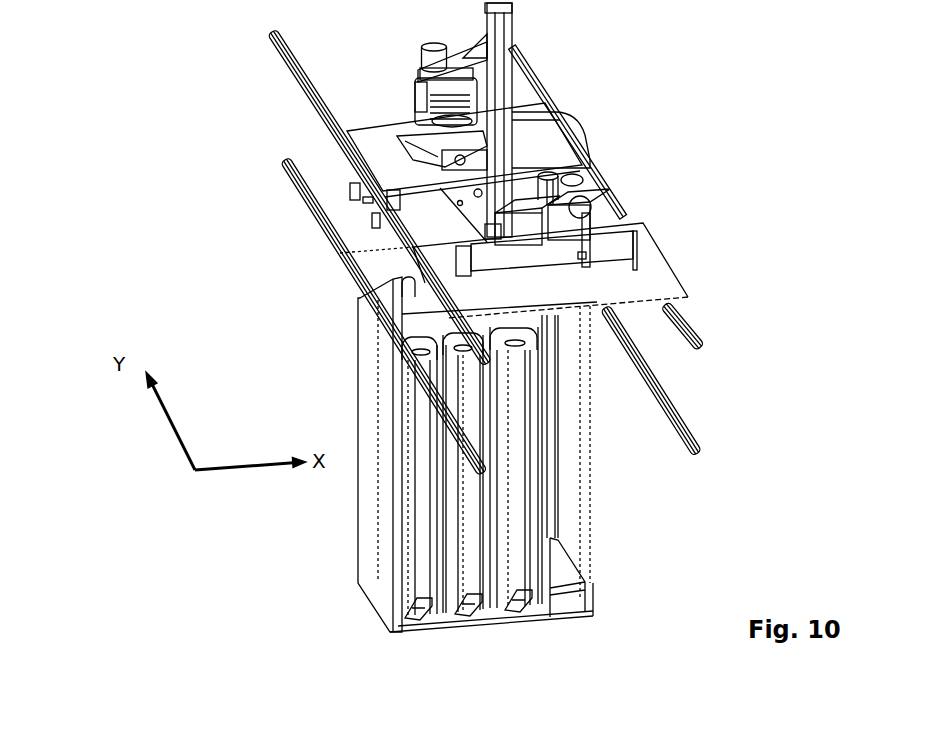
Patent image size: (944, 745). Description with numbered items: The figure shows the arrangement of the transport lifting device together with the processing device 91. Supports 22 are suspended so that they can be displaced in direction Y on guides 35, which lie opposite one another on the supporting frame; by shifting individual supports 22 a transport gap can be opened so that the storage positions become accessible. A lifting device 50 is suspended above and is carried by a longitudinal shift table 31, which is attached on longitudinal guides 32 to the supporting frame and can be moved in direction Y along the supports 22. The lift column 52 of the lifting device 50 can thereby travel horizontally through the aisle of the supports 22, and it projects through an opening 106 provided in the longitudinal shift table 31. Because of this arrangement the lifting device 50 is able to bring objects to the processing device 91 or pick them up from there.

The supports 22 is at (448, 454).
The longitudinal shift table 31 is at (424, 146).
The longitudinal guides 32 is at (568, 121).
The guides 35 is at (485, 316).
The lifting device 50 is at (395, 102).
The lift column 52 is at (535, 121).
The processing device 91 is at (514, 212).
The opening 106 is at (413, 133).